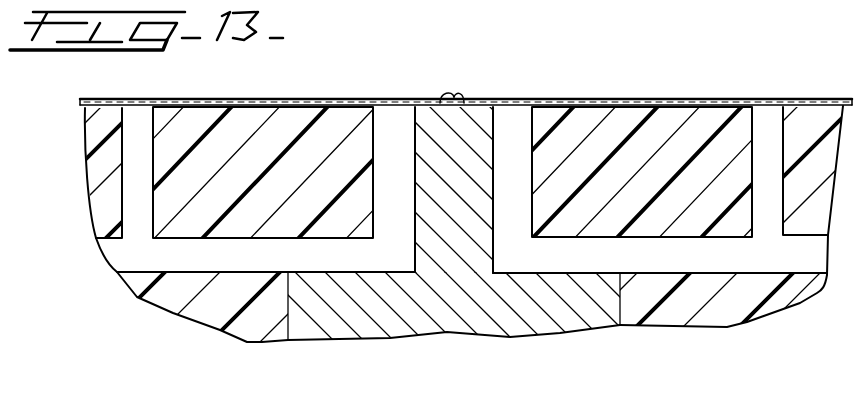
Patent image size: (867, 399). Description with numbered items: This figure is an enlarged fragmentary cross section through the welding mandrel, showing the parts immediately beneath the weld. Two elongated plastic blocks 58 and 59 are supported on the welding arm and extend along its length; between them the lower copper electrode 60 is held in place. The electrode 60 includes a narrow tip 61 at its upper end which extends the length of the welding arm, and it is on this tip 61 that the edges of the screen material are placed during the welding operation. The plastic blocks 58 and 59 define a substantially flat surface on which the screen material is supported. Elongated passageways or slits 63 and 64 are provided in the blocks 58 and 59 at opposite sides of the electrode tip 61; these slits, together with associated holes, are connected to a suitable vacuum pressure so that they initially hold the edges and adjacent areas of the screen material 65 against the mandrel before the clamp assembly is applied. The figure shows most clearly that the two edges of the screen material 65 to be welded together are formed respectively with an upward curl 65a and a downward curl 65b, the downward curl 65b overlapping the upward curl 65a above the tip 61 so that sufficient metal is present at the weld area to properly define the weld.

The plastic block 58 is at (210, 308).
The plastic block 59 is at (718, 313).
The lower copper electrode 60 is at (430, 349).
The narrow tip 61 is at (470, 193).
The elongated passageway or slit 63 is at (382, 117).
The elongated passageway or slit 64 is at (512, 115).
The screen material 65 is at (710, 100).
The upward curl 65a is at (447, 103).
The downward curl 65b is at (455, 96).